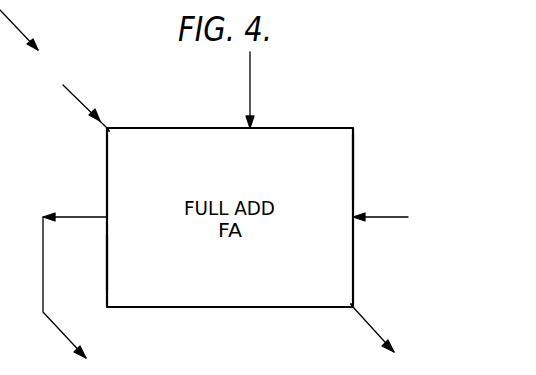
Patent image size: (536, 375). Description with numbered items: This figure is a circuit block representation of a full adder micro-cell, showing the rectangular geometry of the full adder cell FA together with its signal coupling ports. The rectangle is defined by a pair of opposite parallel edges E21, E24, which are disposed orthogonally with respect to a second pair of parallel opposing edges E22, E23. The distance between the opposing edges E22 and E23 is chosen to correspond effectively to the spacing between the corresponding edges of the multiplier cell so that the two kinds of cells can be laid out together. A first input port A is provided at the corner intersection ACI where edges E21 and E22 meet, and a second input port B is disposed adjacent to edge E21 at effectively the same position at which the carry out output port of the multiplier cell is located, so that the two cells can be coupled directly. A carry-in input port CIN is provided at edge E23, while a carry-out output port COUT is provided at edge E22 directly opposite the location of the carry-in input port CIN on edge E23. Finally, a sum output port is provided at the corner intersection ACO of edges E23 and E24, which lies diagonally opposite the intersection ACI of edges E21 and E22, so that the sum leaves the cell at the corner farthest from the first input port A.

The first input port A is at (73, 92).
The second input port B is at (250, 74).
The intersection of edges E21 and E22 ACI is at (108, 129).
The edge E21 is at (213, 129).
The edge E22 is at (107, 264).
The edge E23 is at (353, 159).
The edge E24 is at (236, 307).
The carry-in input port CIN is at (390, 200).
The carry-out output port COUT is at (43, 212).
The intersection of edges E23 and E24 ACO is at (353, 307).